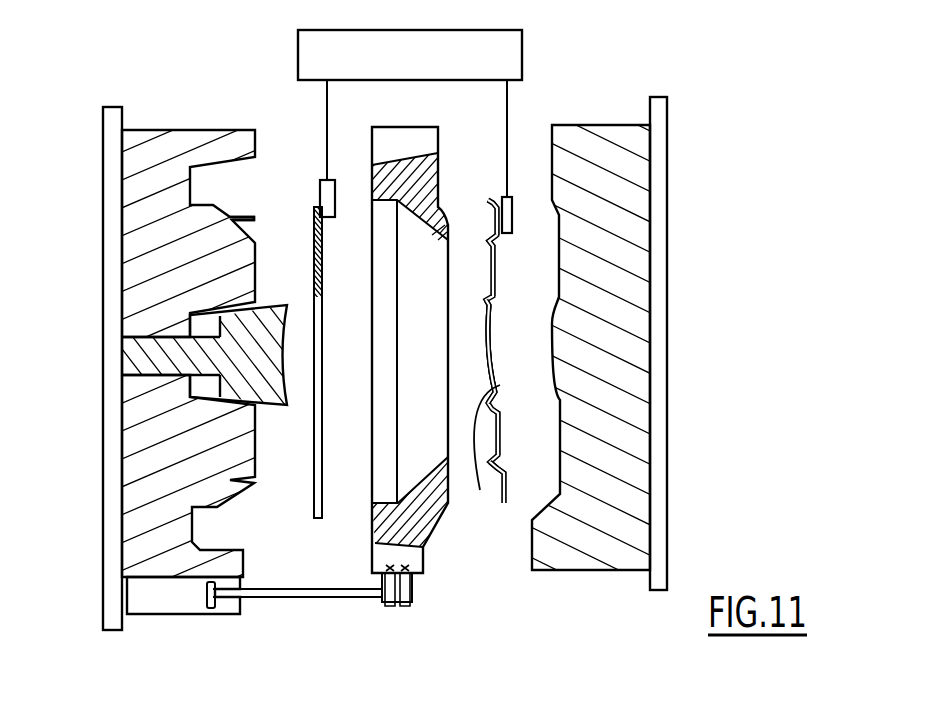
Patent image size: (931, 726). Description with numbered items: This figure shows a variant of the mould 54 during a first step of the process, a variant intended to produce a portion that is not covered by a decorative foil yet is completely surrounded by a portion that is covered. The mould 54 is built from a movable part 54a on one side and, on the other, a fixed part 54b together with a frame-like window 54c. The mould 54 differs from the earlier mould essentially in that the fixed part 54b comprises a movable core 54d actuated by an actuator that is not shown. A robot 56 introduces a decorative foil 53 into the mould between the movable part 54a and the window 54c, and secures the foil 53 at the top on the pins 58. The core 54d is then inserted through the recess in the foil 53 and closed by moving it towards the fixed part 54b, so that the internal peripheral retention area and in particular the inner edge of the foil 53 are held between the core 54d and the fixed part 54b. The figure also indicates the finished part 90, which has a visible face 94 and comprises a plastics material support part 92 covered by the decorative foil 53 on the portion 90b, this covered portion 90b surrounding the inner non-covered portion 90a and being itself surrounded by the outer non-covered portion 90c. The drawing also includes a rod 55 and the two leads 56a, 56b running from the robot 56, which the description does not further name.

The mould 54 is at (663, 640).
The movable part 54a is at (610, 543).
The fixed part 54b is at (167, 562).
The window 54c is at (415, 530).
The movable core 54d is at (156, 357).
The rod 55 is at (300, 598).
The robot 56 is at (431, 66).
The left lead wire 56a is at (326, 108).
The right lead wire 56b is at (508, 96).
The foil 53 is at (310, 218).
The pins 58 is at (240, 217).
The finished part 90 is at (511, 254).
The non-covered portion 90a is at (502, 391).
The covered portion 90b is at (502, 278).
The non-covered portion 90c is at (502, 223).
The plastics material support part 92 is at (480, 490).
The visible face 94 is at (519, 345).